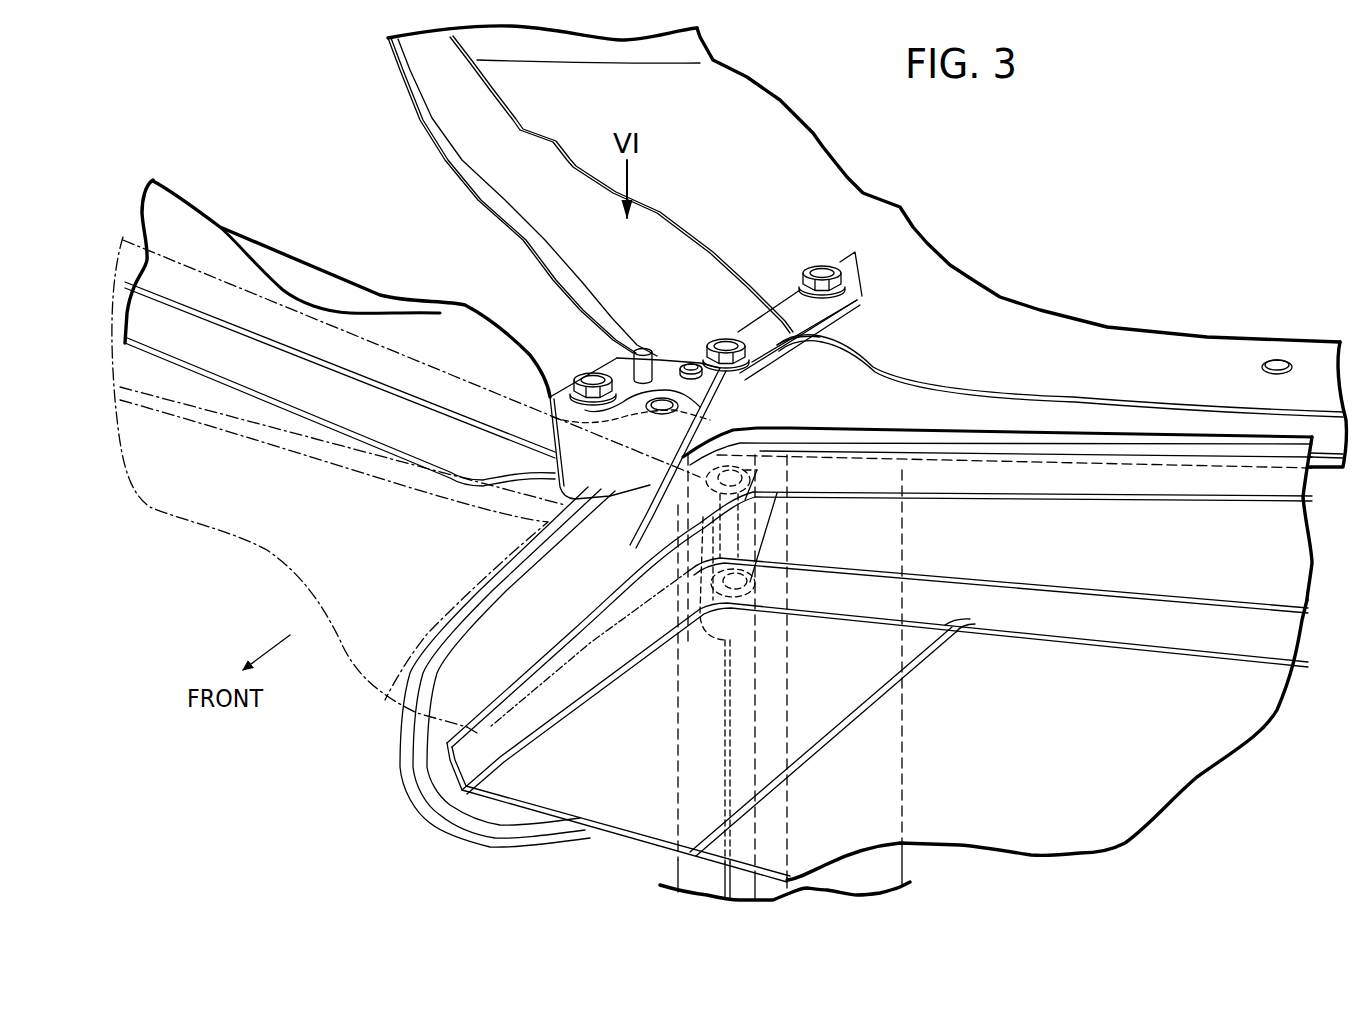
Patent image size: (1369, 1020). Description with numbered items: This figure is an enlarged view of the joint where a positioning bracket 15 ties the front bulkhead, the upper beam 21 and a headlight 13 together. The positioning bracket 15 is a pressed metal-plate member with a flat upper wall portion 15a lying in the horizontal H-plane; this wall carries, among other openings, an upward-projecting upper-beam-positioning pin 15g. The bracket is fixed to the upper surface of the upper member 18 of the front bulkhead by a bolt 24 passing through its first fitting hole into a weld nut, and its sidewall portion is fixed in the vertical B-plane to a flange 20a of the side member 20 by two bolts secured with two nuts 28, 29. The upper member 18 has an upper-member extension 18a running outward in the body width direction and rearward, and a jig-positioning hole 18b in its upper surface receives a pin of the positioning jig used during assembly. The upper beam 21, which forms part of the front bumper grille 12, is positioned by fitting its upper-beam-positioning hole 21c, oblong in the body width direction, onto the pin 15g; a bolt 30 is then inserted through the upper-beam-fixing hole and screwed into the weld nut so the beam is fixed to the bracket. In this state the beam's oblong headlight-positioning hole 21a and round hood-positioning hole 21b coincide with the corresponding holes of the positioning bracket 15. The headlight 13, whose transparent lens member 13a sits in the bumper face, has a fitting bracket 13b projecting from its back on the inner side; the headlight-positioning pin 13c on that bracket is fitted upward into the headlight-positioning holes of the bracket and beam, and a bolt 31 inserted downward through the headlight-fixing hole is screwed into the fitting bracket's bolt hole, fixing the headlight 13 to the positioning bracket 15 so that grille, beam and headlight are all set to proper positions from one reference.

The front bumper grille 12 is at (387, 338).
The headlight 13 is at (998, 418).
The lens member 13a is at (627, 807).
The fitting bracket 13b is at (785, 372).
The headlight-positioning pin 13c is at (692, 362).
The positioning bracket 15 is at (670, 336).
The upper wall portion 15a is at (776, 325).
The upper-beam-positioning pin 15g is at (641, 348).
The upper member 18 is at (420, 139).
The upper-member extension 18a is at (1088, 342).
The jig-positioning hole 18b is at (1288, 358).
The side member 20 is at (912, 737).
The flange 20a is at (728, 718).
The upper beam 21 is at (303, 418).
The headlight-positioning hole 21a is at (720, 374).
The hood-positioning hole 21b is at (661, 414).
The upper-beam-positioning hole 21c is at (615, 350).
The bolt 24 is at (822, 262).
The nut 28 is at (787, 498).
The nut 29 is at (758, 580).
The bolt 30 is at (572, 372).
The bolt 31 is at (728, 332).